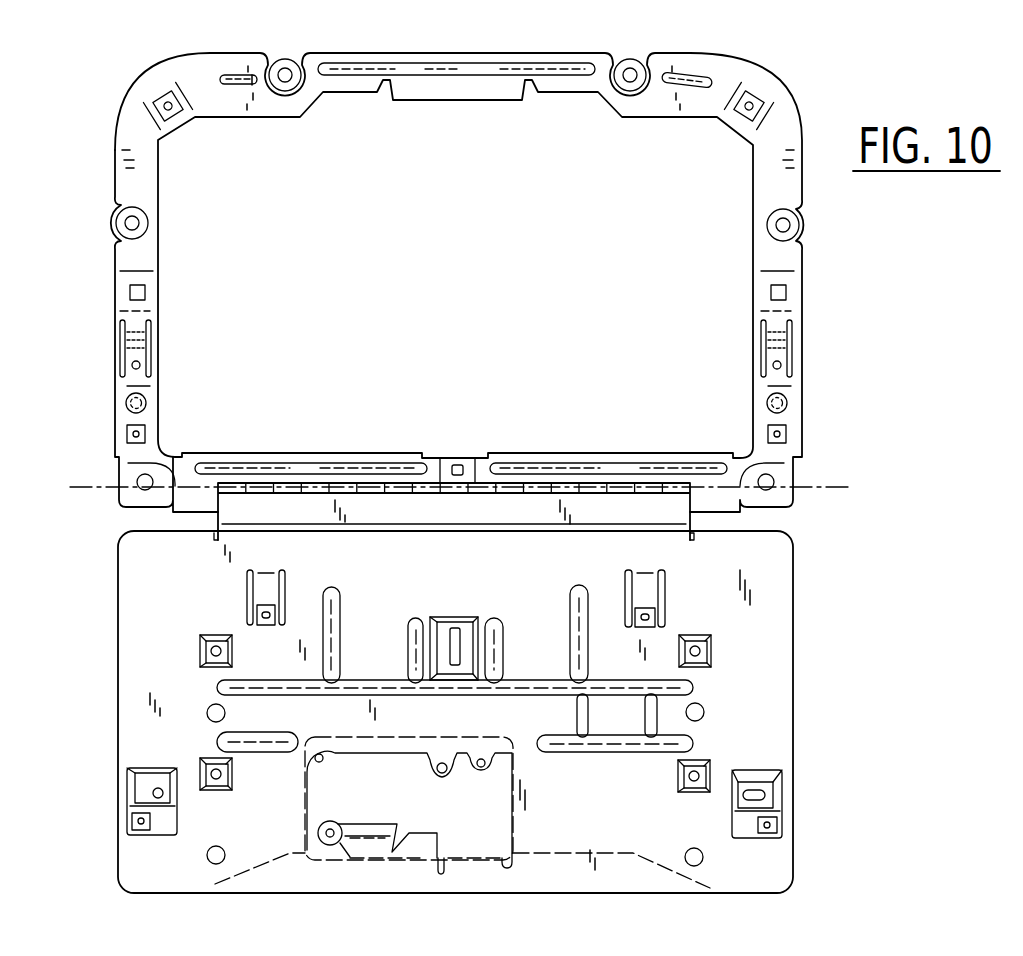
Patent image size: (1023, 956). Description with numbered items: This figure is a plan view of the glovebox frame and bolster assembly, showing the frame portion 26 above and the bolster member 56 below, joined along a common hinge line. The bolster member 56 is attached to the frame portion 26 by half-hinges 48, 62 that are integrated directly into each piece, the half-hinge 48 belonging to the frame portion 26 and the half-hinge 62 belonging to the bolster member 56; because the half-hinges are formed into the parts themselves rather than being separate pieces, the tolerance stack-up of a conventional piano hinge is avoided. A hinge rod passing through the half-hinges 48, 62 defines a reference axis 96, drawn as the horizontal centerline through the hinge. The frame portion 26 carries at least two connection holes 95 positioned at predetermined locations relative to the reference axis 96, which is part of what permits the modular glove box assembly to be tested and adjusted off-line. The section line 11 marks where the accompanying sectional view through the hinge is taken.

The frame portion 26 is at (722, 87).
The connection holes 95 is at (287, 72).
The half-hinge 48 is at (182, 505).
The reference axis 96 is at (823, 487).
The half-hinge 62 is at (668, 512).
The bolster member 56 is at (153, 620).
The section line 11- 11 is at (400, 564).